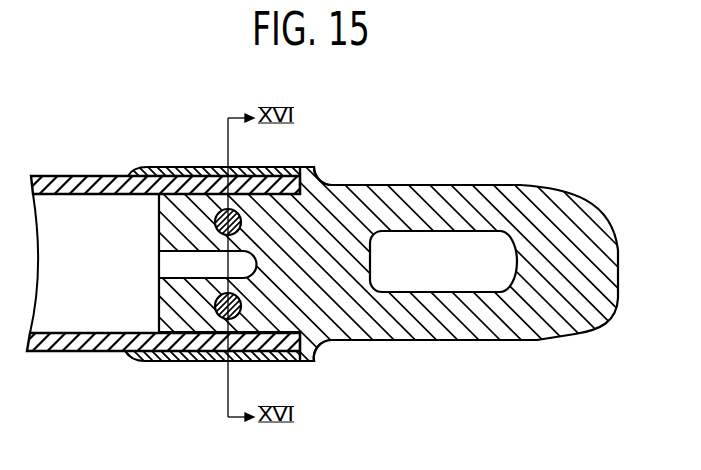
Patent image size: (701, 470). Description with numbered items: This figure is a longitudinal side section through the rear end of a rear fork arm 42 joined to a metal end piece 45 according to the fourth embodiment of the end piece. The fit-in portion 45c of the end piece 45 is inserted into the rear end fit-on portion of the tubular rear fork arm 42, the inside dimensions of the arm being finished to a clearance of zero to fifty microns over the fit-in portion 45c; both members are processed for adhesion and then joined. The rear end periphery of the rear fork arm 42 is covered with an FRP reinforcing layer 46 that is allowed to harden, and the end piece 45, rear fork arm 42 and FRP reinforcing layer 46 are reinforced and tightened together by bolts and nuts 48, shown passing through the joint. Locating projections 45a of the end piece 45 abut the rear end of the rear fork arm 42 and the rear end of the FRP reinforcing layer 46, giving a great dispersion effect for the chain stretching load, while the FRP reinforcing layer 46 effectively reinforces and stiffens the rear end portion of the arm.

The rear fork arm 42 is at (82, 176).
The FRP reinforcing layer 46 is at (185, 167).
The bolts and nuts 48 is at (217, 300).
The metal end piece 45 is at (440, 185).
The locating projections 45a is at (322, 178).
The fit-in portion 45c is at (172, 361).